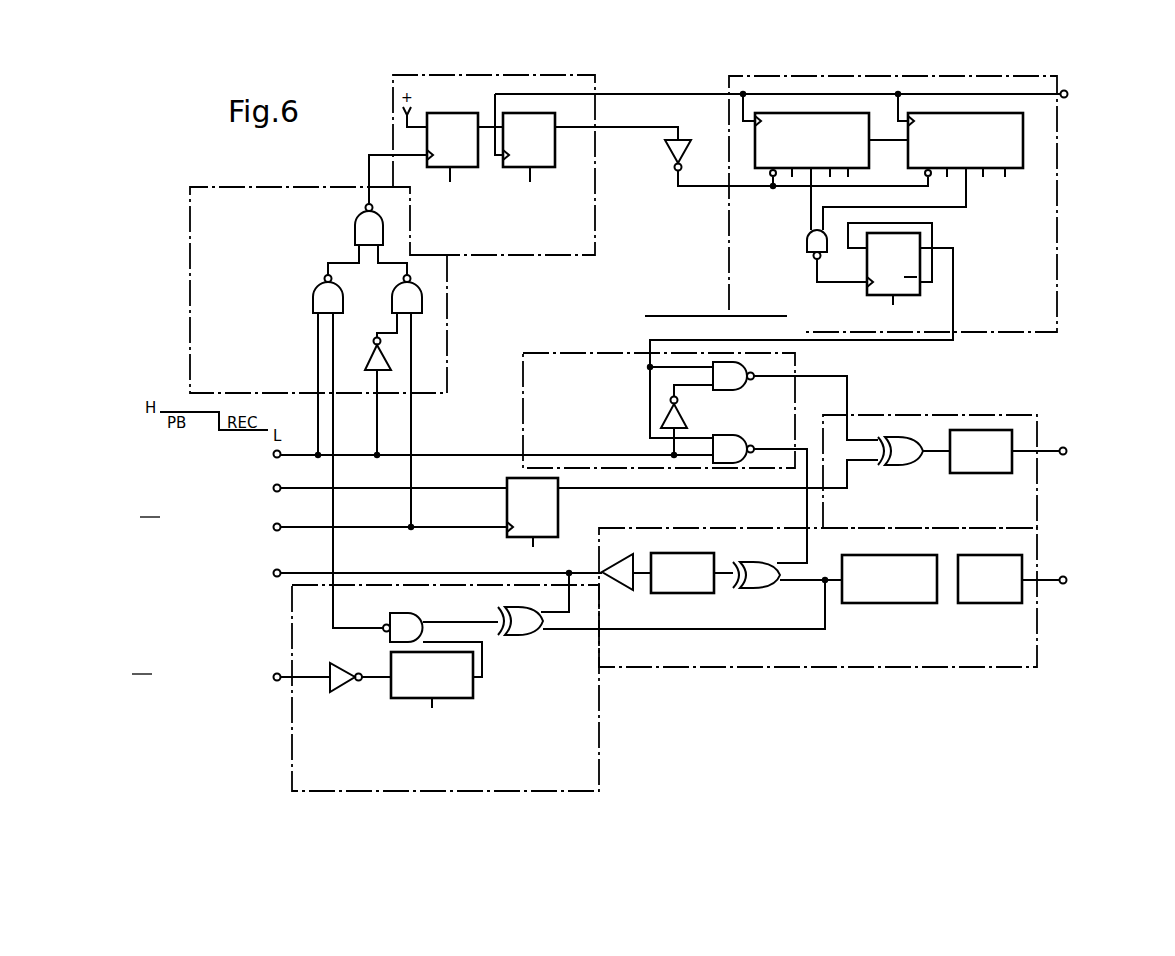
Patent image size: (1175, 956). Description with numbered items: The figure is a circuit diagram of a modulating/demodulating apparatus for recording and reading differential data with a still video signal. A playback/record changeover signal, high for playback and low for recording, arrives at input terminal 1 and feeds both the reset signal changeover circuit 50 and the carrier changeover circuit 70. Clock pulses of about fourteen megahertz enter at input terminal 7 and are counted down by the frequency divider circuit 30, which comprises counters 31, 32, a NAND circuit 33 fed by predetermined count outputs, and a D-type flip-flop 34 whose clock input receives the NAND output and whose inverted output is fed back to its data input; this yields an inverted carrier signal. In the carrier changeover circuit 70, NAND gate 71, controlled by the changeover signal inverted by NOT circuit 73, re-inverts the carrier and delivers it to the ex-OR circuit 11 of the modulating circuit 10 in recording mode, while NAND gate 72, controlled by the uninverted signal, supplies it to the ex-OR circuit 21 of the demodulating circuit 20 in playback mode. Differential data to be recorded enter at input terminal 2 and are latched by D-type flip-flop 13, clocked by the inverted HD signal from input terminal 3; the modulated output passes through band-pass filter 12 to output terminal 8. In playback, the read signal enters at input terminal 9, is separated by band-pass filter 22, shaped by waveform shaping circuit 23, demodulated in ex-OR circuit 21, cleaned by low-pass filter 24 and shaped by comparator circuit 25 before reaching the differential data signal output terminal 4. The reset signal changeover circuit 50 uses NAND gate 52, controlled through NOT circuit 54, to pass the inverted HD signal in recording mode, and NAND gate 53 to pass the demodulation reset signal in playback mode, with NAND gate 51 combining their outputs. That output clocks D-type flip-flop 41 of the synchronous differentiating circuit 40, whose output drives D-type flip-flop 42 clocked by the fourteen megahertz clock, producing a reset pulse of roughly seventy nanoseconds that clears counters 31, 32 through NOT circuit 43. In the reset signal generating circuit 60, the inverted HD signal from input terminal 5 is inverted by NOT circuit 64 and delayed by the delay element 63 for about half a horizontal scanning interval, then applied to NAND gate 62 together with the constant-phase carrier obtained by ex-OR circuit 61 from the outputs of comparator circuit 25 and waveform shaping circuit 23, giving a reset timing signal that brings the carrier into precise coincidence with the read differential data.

The input terminal 1 is at (279, 458).
The input terminal 2 is at (279, 491).
The input terminal 3 is at (279, 530).
The differential data signal output terminal 4 is at (277, 577).
The input terminal 5 is at (277, 673).
The input terminal 7 is at (1065, 98).
The output terminal 8 is at (1063, 447).
The input terminal 9 is at (1060, 576).
The modulating circuit 10 is at (938, 414).
The ex-OR circuit 11 is at (918, 428).
The band-pass filter 12 is at (1006, 428).
The D-type flip-flop 13 is at (560, 510).
The demodulating circuit 20 is at (877, 669).
The ex-OR circuit 21 is at (748, 560).
The band-pass filter 22 is at (979, 555).
The waveform shaping circuit 23 is at (888, 555).
The low-pass filter 24 is at (666, 553).
The comparator circuit 25 is at (619, 556).
The frequency divider circuit 30 is at (1060, 300).
The counter 31 is at (869, 158).
The counter 32 is at (1024, 168).
The NAND circuit 33 is at (806, 241).
The D-type flip-flop 34 is at (866, 261).
The synchronous differentiating circuit 40 is at (597, 233).
The D-type flip-flop 41 is at (450, 113).
The D-type flip-flop 42 is at (558, 155).
The NOT circuit 43 is at (672, 160).
The reset signal changeover circuit 50 is at (451, 333).
The NAND gate 51 is at (353, 231).
The NAND gate 52 is at (423, 305).
The NAND gate 53 is at (343, 297).
The NOT circuit 54 is at (365, 360).
The reset signal generating circuit 60 is at (600, 711).
The ex-OR circuit 61 is at (526, 636).
The NAND gate 62 is at (424, 613).
The delay circuit 63 is at (476, 690).
The NOT circuit 64 is at (356, 684).
The carrier changeover circuit 70 is at (795, 367).
The NAND gate 71 is at (750, 382).
The NAND gate 72 is at (748, 428).
The NOT circuit 73 is at (697, 411).